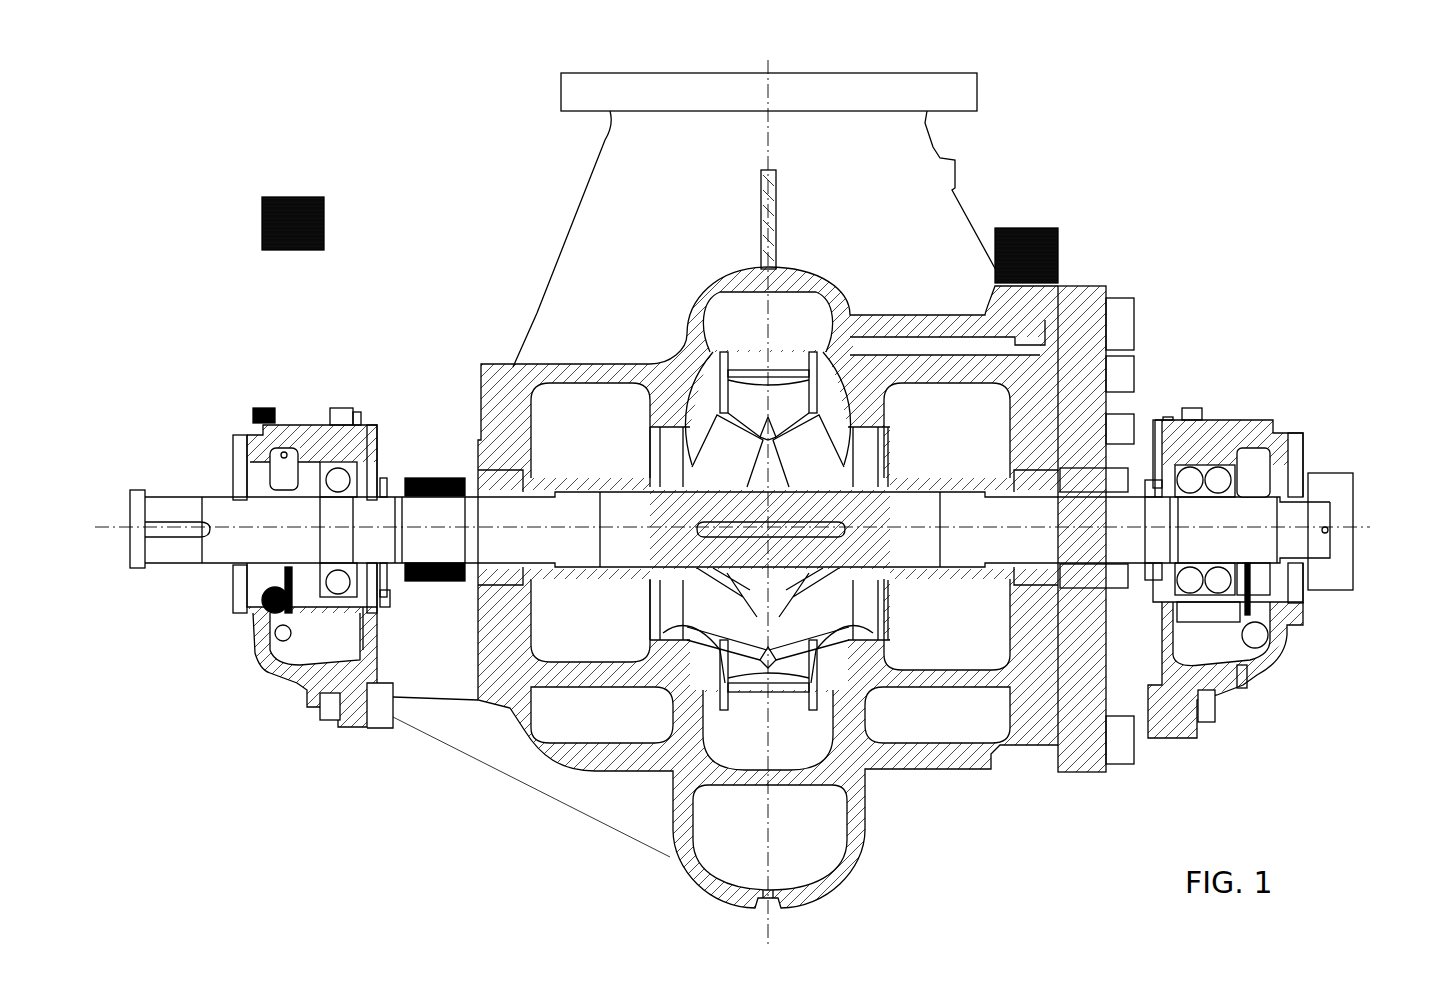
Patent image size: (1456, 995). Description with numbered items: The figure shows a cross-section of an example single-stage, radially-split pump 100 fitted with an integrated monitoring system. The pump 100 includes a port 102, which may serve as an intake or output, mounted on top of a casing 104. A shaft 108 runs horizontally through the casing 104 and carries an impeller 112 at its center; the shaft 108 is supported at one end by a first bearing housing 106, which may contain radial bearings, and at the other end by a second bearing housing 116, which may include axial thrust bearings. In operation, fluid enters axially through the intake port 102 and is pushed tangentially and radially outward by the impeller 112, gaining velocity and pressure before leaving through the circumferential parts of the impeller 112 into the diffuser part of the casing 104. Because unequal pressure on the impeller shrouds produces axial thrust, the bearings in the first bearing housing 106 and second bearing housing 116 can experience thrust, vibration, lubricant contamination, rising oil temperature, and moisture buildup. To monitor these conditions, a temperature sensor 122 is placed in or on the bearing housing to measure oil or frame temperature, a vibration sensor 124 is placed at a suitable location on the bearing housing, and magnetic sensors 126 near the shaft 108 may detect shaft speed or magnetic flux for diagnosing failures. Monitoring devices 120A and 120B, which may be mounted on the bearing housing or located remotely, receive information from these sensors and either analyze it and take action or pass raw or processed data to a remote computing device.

The single-stage pump 100 is at (759, 502).
The port 102 is at (592, 92).
The casing 104 is at (568, 296).
The first bearing housing 106 is at (282, 722).
The shaft 108 is at (198, 488).
The impeller 112 is at (708, 668).
The second bearing housing 116 is at (1228, 396).
The monitoring device 120A is at (1040, 222).
The monitoring device 120B is at (278, 190).
The temperature sensor 122 is at (258, 616).
The vibration sensor 124 is at (262, 386).
The magnetic sensors 126 is at (436, 470).